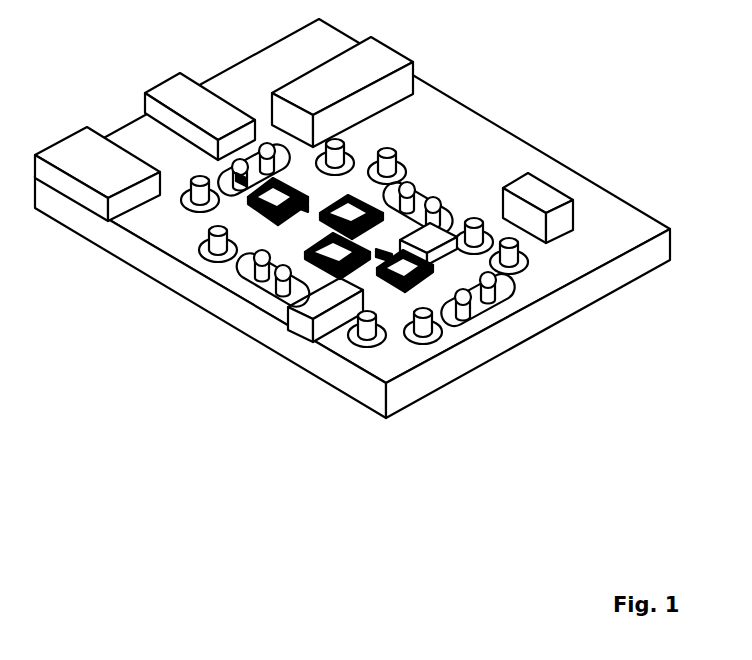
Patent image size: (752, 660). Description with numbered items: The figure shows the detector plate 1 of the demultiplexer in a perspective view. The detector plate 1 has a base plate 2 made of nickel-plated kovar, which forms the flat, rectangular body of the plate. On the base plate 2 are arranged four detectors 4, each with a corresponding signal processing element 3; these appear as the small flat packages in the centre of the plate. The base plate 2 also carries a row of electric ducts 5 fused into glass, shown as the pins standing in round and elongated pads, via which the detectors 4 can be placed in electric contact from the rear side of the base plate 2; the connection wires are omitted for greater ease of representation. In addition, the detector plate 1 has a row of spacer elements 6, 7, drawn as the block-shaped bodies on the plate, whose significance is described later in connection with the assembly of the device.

The detector plate 1 is at (564, 85).
The base plate 2 is at (566, 302).
The signal processing elements 3 is at (248, 200).
The detectors 4 is at (290, 217).
The electric ducts 5 is at (483, 315).
The spacer elements 6 is at (163, 90).
The spacer elements 7 is at (368, 53).